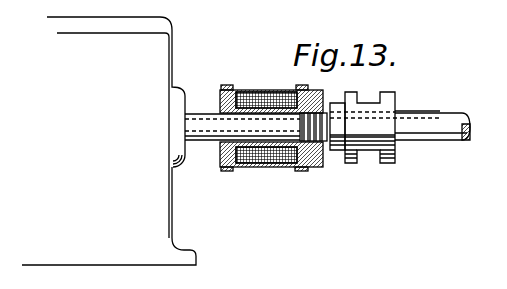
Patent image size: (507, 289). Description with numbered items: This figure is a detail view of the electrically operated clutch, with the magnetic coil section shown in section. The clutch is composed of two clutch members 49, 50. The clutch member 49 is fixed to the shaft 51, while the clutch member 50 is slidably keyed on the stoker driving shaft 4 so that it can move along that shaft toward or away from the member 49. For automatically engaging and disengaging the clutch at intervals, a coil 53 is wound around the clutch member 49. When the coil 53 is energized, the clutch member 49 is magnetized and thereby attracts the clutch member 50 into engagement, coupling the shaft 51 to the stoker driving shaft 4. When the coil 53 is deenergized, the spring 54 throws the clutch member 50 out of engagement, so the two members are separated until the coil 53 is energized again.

The stoker driving shaft 4 is at (433, 131).
The clutch member 49 is at (315, 150).
The clutch member 50 is at (370, 148).
The shaft 51 is at (199, 116).
The coil 53 is at (256, 91).
The spring 54 is at (327, 110).